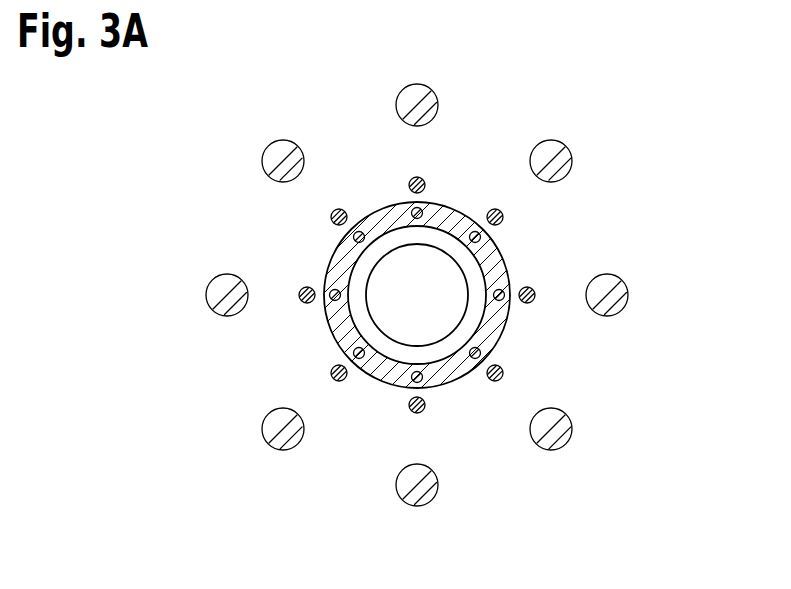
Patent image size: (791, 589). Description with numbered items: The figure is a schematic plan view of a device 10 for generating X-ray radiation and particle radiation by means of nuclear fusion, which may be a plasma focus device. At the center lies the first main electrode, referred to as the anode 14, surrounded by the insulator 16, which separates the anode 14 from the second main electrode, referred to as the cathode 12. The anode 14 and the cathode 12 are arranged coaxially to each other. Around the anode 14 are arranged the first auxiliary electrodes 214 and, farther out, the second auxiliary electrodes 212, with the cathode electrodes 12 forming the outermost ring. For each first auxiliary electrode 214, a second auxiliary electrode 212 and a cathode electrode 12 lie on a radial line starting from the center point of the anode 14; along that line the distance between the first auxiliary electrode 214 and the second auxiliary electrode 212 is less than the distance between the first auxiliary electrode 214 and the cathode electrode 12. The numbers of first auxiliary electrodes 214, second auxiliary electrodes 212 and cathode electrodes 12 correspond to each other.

The device 10 is at (648, 137).
The second main electrode 12 is at (271, 152).
The first main electrode 14 is at (370, 332).
The insulator 16 is at (468, 252).
The second auxiliary electrode 212 is at (342, 208).
The first auxiliary electrode 214 is at (360, 232).